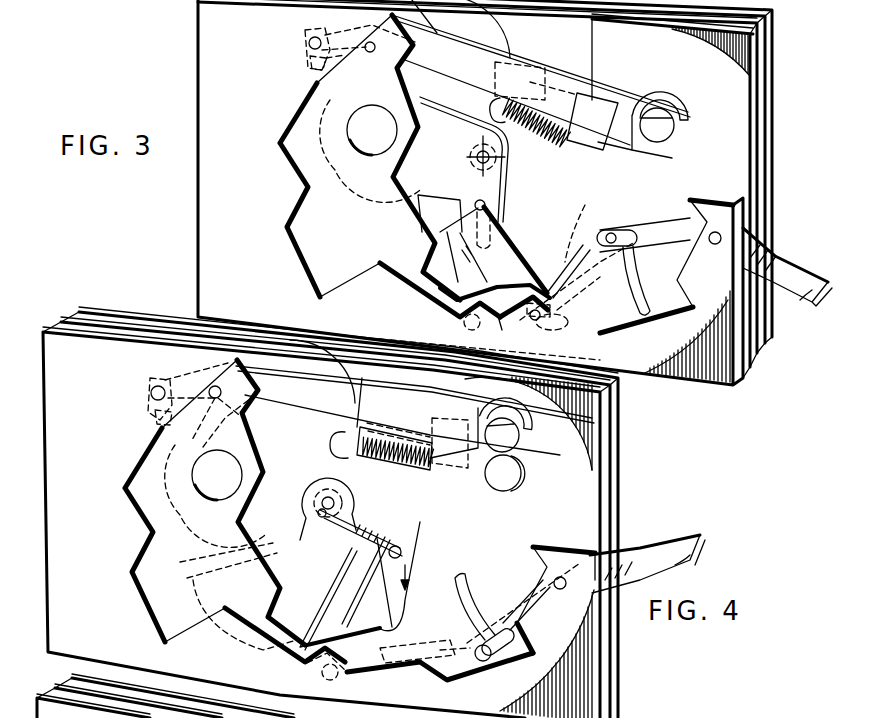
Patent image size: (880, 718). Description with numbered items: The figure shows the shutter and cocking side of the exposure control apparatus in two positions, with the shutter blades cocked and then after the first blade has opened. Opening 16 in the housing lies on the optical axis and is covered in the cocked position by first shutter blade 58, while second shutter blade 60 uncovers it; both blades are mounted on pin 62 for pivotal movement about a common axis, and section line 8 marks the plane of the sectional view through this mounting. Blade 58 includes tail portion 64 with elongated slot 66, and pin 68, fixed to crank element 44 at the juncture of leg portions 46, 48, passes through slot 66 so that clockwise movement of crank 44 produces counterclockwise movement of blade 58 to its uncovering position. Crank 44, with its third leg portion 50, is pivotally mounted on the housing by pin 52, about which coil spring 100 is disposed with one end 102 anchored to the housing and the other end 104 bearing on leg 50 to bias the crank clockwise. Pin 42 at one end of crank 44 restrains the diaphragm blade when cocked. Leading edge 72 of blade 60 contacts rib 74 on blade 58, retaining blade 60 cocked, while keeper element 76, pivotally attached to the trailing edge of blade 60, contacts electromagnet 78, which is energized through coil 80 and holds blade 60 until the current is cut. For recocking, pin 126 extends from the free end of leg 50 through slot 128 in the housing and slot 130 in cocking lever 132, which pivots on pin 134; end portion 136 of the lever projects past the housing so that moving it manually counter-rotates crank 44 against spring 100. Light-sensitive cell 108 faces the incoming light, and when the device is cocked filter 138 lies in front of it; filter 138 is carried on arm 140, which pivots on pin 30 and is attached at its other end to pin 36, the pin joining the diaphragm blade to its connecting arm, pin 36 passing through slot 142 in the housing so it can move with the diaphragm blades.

In FIG. 3, the section line 8- 8 is at (470, 133).
In FIG. 3, the opening 16 is at (366, 150).
In FIG. 4, the opening 16 is at (195, 492).
In FIG. 3, the pin 30 is at (366, 42).
In FIG. 4, the pin 30 is at (212, 385).
In FIG. 3, the pin 36 is at (308, 44).
In FIG. 4, the pin 36 is at (150, 396).
In FIG. 4, the pin 42 is at (330, 510).
In FIG. 3, the crank element 44 is at (455, 298).
In FIG. 4, the crank element 44 is at (430, 590).
In FIG. 3, the leg portion 46 is at (480, 261).
In FIG. 4, the leg portion 46 is at (330, 560).
In FIG. 3, the leg portion 48 is at (500, 322).
In FIG. 4, the leg portion 48 is at (370, 628).
In FIG. 3, the leg portion 50 is at (548, 288).
In FIG. 4, the leg portion 50 is at (447, 682).
In FIG. 3, the pin 52 is at (548, 328).
In FIG. 3, the first shutter blade 58 is at (400, 180).
In FIG. 4, the first shutter blade 58 is at (318, 559).
In FIG. 3, the second shutter blade 60 is at (498, 40).
In FIG. 4, the second shutter blade 60 is at (296, 441).
In FIG. 3, the pin 62 is at (506, 175).
In FIG. 4, the pin 62 is at (312, 515).
In FIG. 3, the tail portion 64 is at (487, 205).
In FIG. 4, the tail portion 64 is at (370, 520).
In FIG. 3, the elongated slot 66 is at (458, 202).
In FIG. 4, the elongated slot 66 is at (358, 555).
In FIG. 3, the pin 68 is at (492, 218).
In FIG. 4, the pin 68 is at (402, 548).
In FIG. 4, the leading edge 72 is at (203, 447).
In FIG. 3, the rib 74 is at (322, 90).
In FIG. 4, the rib 74 is at (200, 582).
In FIG. 3, the keeper element 76 is at (522, 92).
In FIG. 4, the keeper element 76 is at (345, 458).
In FIG. 3, the electromagnet 78 is at (586, 150).
In FIG. 4, the electromagnet 78 is at (432, 478).
In FIG. 3, the coil 80 is at (510, 125).
In FIG. 4, the coil 80 is at (388, 465).
In FIG. 3, the coil spring 100 is at (562, 272).
In FIG. 4, the coil spring 100 is at (405, 660).
In FIG. 3, the end of coil spring 102 is at (470, 328).
In FIG. 4, the end of coil spring 102 is at (322, 674).
In FIG. 3, the end of coil spring 104 is at (582, 215).
In FIG. 4, the end of coil spring 104 is at (465, 640).
In FIG. 4, the light-sensitive cell 108 is at (512, 480).
In FIG. 3, the pin 126 is at (608, 232).
In FIG. 4, the pin 126 is at (495, 632).
In FIG. 3, the slot 128 is at (640, 300).
In FIG. 4, the slot 128 is at (462, 580).
In FIG. 3, the slot 130 is at (648, 250).
In FIG. 4, the slot 130 is at (515, 660).
In FIG. 3, the cocking lever 132 is at (778, 262).
In FIG. 4, the cocking lever 132 is at (620, 560).
In FIG. 3, the pin 134 is at (712, 245).
In FIG. 4, the pin 134 is at (562, 595).
In FIG. 3, the end portion 136 is at (810, 300).
In FIG. 4, the end portion 136 is at (672, 548).
In FIG. 3, the filter 138 is at (675, 112).
In FIG. 4, the filter 138 is at (514, 440).
In FIG. 3, the arm 140 is at (605, 80).
In FIG. 4, the arm 140 is at (372, 395).
In FIG. 3, the slot 142 is at (310, 62).
In FIG. 4, the slot 142 is at (158, 422).